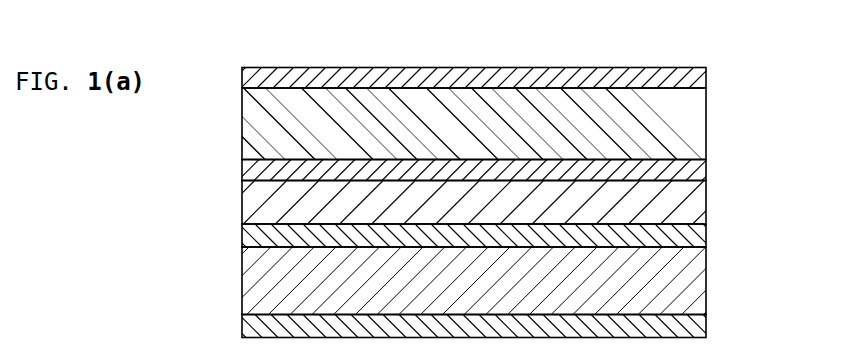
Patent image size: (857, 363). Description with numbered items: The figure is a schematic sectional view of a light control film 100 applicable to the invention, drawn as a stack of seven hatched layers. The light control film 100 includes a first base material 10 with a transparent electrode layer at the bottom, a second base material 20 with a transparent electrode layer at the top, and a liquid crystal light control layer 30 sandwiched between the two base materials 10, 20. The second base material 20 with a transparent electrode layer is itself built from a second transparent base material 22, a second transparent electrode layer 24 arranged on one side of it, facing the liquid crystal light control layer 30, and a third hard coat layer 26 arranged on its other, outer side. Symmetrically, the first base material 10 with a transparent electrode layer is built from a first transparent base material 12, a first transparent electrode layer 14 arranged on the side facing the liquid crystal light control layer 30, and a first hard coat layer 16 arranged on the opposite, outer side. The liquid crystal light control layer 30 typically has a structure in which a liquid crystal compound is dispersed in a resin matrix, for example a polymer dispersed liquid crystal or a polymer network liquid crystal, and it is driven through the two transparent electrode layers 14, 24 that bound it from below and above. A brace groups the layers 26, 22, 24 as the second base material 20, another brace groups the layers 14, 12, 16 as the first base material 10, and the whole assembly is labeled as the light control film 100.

The light control film 100 is at (726, 33).
The second base material with a transparent electrode layer 20 is at (510, 122).
The third hard coat layer 26 is at (706, 78).
The second transparent base material 22 is at (706, 120).
The second transparent electrode layer 24 is at (496, 173).
The liquid crystal light control layer 30 is at (706, 199).
The first base material with a transparent electrode layer 10 is at (503, 278).
The first transparent electrode layer 14 is at (706, 232).
The first transparent base material 12 is at (706, 278).
The first hard coat layer 16 is at (498, 325).